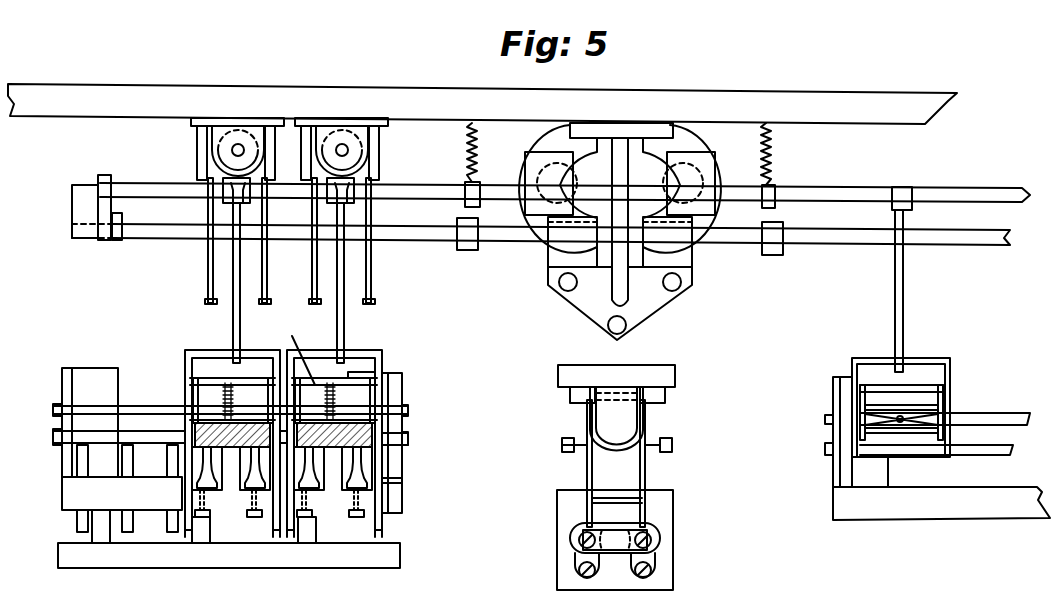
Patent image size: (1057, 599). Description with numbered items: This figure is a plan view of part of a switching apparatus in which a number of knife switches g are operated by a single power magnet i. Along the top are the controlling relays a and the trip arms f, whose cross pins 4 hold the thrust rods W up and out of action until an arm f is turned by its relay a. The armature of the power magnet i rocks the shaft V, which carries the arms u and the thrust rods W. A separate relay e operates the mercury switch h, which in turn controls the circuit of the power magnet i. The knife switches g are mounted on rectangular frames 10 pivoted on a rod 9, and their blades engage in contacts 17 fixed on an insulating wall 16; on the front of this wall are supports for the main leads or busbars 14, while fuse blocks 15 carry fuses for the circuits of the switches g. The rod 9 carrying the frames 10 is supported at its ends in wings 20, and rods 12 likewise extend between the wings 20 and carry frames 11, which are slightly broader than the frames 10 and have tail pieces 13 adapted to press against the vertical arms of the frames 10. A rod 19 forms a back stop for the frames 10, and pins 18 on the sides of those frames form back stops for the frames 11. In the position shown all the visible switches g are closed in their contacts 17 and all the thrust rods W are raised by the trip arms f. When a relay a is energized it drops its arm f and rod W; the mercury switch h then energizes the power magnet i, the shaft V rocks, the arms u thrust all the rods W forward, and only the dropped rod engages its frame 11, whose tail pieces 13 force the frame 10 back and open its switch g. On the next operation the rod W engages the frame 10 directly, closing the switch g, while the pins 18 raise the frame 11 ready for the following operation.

The controlling relay a is at (238, 140).
The trip arm f is at (208, 268).
The cross pin 4 is at (250, 298).
The thrust rod W is at (232, 318).
The shaft V is at (419, 233).
The arm u is at (100, 207).
The power magnet i is at (532, 226).
The insulating wall 16 is at (75, 495).
The fuse block 15 is at (120, 522).
The main lead or busbar 14 is at (305, 558).
The rod 9 is at (398, 410).
The rod 12 is at (398, 443).
The frame 11 is at (385, 352).
The wing 20 is at (392, 383).
The contact 17 is at (396, 478).
The rod 19 is at (242, 385).
The pin 18 is at (185, 387).
The tail piece 13 is at (190, 427).
The knife switch g is at (190, 430).
The rectangular frame 10 is at (905, 418).
The relay e is at (605, 415).
The mercury switch h is at (572, 540).